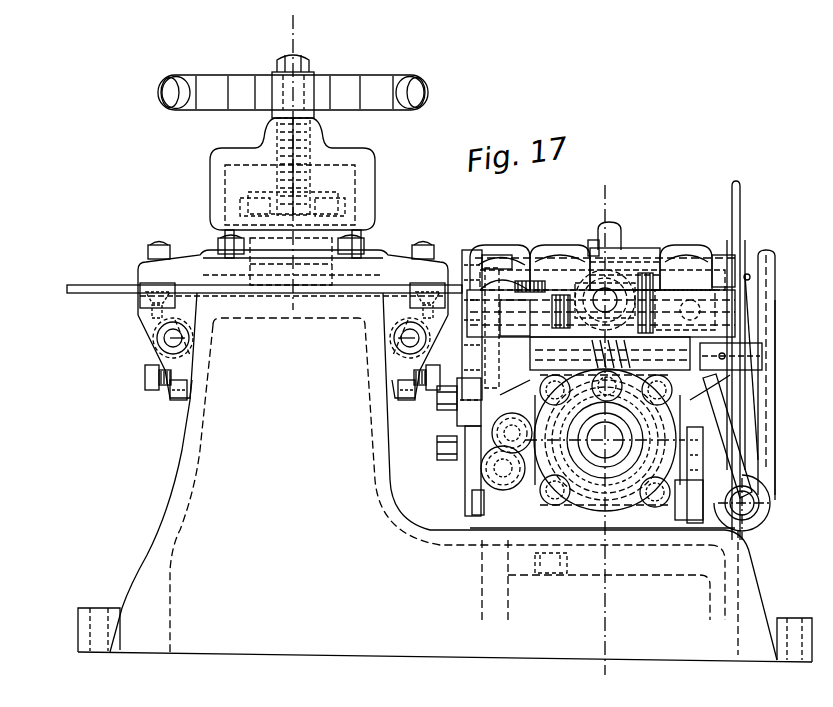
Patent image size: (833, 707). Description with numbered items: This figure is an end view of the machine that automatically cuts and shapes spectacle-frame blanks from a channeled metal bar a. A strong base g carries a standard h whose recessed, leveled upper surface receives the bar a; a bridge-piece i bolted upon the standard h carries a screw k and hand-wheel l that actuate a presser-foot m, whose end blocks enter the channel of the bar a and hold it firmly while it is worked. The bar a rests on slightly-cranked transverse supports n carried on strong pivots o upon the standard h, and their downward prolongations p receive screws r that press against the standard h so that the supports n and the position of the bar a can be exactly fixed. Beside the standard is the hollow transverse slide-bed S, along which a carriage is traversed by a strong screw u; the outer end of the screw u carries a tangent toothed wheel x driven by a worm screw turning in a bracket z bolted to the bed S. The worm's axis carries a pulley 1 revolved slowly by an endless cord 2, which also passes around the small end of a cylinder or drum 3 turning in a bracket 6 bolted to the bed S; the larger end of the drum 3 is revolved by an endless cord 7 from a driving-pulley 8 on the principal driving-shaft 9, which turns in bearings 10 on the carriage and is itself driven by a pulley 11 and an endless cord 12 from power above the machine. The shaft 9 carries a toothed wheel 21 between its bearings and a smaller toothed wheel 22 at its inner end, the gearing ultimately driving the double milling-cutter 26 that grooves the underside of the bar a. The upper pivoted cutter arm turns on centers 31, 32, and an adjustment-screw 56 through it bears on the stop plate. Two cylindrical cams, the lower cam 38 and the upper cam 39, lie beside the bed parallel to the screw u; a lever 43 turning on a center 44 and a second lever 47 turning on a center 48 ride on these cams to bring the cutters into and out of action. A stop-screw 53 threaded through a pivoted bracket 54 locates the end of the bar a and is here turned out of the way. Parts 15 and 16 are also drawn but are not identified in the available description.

The hand-wheel l is at (373, 92).
The screw k is at (305, 118).
The bridge-piece i is at (292, 201).
The channeled bar a is at (112, 290).
The presser-foot m is at (293, 275).
The transverse supports n is at (140, 298).
The pivots o is at (160, 338).
The downward prolongations p is at (176, 398).
The screws r is at (145, 380).
The standard h is at (410, 472).
The base g is at (445, 596).
The tangent toothed wheel x is at (628, 500).
The bracket 54 is at (490, 268).
The pivot of upper arm 32 is at (535, 268).
The pivot of upper arm 31 is at (672, 262).
The smaller toothed wheel 22 is at (585, 262).
The oil cup 15 is at (618, 238).
The adjustment-screw 56 is at (592, 242).
The stop-screw 53 is at (538, 284).
The bearings 10 is at (575, 311).
The toothed wheel 21 is at (645, 272).
The clutch 16 is at (685, 308).
The principal driving shaft 9 is at (690, 305).
The bracket z is at (705, 385).
The screw u is at (605, 440).
The upper cam 39 is at (512, 433).
The lower cam 38 is at (503, 468).
The double milling-cutter 26 is at (490, 325).
The center 44 is at (455, 392).
The lever 43 is at (469, 447).
The center 48 is at (452, 458).
The second lever 47 is at (470, 505).
The slide-bed S is at (615, 399).
The endless cord 12 is at (750, 360).
The pulley 11 is at (743, 250).
The endless cord 2 is at (768, 258).
The driving-pulley 8 is at (752, 280).
The pulley 1 is at (782, 312).
The endless cord 7 is at (758, 482).
The cylinder or drum 3 is at (762, 510).
The bracket 6 is at (728, 440).